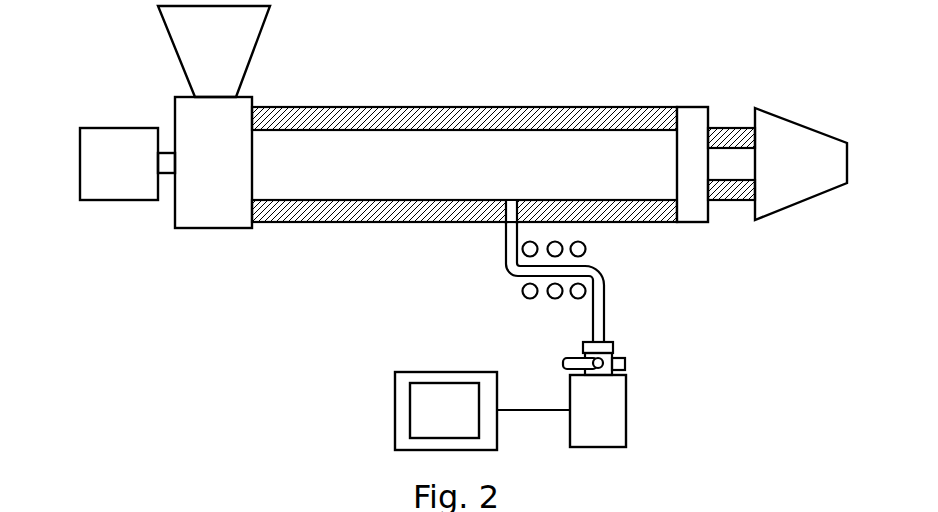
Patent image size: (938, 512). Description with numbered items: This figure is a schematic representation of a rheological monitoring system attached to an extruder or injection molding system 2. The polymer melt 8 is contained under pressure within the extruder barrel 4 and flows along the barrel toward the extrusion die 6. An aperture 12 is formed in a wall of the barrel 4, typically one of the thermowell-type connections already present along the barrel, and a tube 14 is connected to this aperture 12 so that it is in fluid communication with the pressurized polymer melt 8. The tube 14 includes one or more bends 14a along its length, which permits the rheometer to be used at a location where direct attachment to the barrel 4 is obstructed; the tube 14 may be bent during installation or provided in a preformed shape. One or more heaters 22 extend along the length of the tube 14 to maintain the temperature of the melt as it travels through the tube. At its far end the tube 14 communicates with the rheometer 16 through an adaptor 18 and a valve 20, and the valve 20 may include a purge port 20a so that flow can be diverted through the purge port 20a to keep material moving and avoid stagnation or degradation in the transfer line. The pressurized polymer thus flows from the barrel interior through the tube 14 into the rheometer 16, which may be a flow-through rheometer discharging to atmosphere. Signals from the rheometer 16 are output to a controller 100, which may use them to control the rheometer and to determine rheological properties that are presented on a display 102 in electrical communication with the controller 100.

The extruder or injection molding system 2 is at (110, 40).
The extruder barrel 4 is at (402, 117).
The extrusion die 6 is at (796, 142).
The polymer melt 8 is at (507, 143).
The aperture 12 is at (501, 215).
The tube 14 is at (504, 240).
The bend 14a is at (507, 271).
The rheometer 16 is at (598, 413).
The adaptor 18 is at (608, 347).
The valve 20 is at (585, 356).
The purge port 20a is at (624, 360).
The heater 22 is at (585, 252).
The controller 100 is at (395, 437).
The display 102 is at (438, 417).